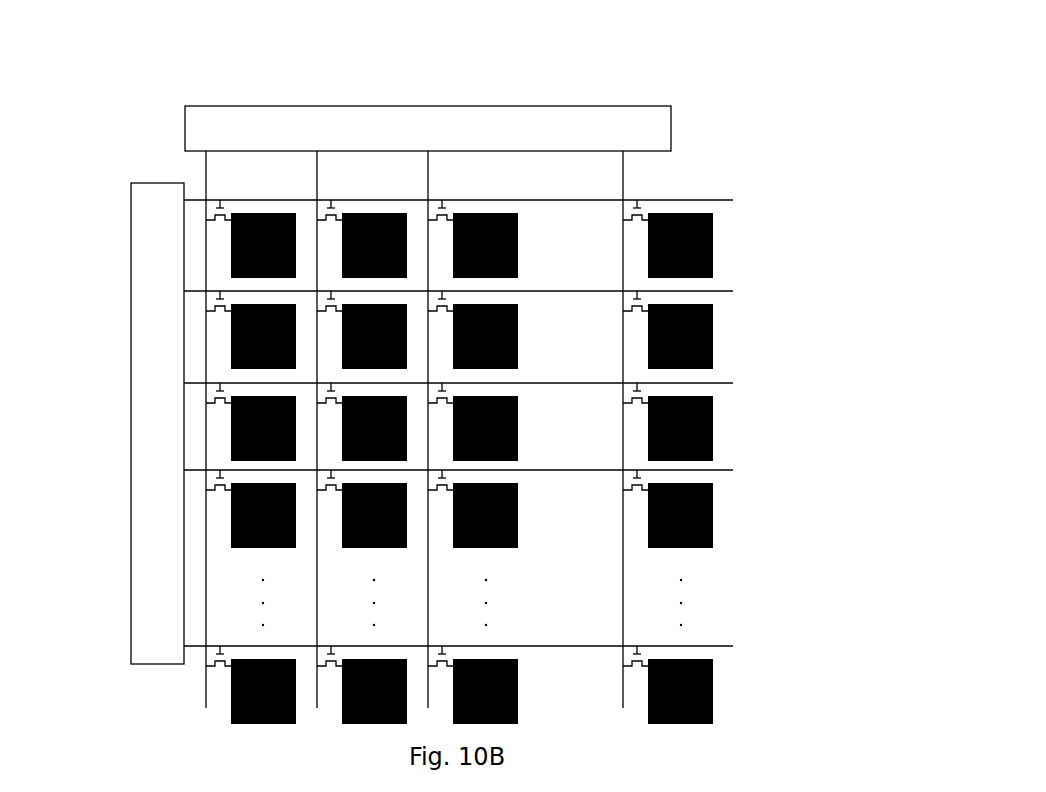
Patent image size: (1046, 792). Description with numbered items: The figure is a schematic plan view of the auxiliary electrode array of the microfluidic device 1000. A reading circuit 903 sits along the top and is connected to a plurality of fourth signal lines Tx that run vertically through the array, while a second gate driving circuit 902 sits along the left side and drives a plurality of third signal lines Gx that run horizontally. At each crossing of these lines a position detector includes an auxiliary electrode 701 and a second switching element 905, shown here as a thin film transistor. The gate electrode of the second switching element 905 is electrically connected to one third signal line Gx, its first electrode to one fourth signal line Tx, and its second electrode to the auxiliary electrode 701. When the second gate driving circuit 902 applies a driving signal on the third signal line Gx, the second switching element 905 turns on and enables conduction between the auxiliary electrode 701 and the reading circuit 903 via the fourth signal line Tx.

The microfluidic device 1000 is at (753, 93).
The reading circuit 903 is at (660, 135).
The second gate driving circuit 902 is at (157, 602).
The auxiliary electrode 701 is at (714, 340).
The second switching element 905 is at (630, 484).